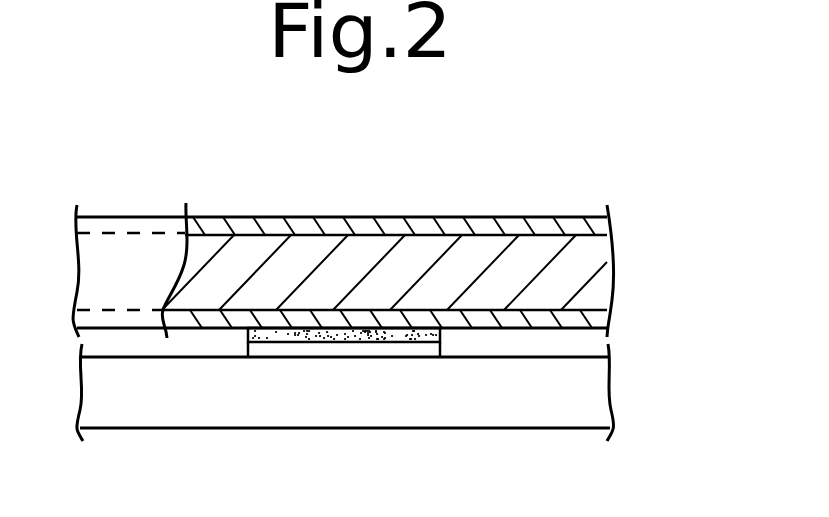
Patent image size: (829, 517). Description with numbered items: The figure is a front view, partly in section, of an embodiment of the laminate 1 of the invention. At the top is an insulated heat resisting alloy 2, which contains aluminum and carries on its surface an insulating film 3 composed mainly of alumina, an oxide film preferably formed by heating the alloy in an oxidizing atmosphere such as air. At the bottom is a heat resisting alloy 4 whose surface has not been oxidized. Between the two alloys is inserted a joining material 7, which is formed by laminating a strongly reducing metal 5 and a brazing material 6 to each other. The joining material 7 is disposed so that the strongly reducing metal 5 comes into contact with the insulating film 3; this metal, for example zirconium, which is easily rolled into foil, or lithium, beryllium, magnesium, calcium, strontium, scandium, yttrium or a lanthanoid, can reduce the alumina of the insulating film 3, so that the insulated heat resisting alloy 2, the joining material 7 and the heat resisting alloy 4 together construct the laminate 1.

The laminate 1 is at (473, 201).
The insulated heat resisting alloy 2 is at (598, 280).
The insulating film 3 is at (303, 217).
The heat resisting alloy 4 is at (588, 409).
The strongly reducing metal 5 is at (443, 334).
The brazing material 6 is at (383, 352).
The joining material 7 is at (237, 339).